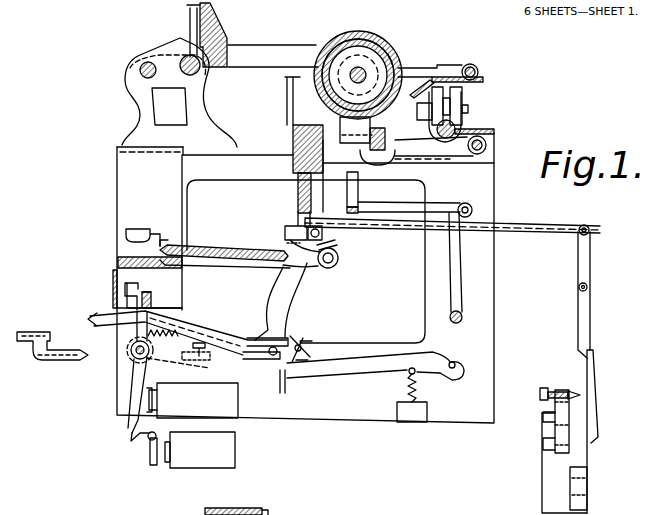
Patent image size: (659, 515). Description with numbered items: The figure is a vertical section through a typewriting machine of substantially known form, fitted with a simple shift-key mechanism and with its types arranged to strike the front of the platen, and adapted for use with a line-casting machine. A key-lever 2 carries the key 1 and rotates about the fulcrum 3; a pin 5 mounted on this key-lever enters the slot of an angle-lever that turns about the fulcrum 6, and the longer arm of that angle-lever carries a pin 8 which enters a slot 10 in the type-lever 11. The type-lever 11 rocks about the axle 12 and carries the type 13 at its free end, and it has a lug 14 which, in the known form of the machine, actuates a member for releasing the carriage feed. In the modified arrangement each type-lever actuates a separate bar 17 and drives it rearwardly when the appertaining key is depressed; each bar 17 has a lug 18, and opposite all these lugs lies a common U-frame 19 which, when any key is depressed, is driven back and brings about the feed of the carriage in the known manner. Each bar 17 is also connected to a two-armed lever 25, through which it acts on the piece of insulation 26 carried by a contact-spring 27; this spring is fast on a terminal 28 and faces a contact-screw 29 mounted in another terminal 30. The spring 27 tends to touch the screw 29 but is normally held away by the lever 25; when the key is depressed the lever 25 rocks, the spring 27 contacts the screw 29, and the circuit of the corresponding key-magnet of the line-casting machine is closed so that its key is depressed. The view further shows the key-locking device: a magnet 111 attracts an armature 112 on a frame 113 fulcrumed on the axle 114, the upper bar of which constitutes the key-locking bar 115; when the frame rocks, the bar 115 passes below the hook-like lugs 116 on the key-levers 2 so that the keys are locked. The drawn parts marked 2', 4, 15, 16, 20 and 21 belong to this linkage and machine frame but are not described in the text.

The key 1 is at (40, 332).
The key-lever 2 is at (179, 332).
The lever arm 2' is at (368, 370).
The fulcrum 3 is at (452, 362).
The spring 4 is at (408, 389).
The pin 5 is at (276, 349).
The fulcrum 6 is at (302, 350).
The pin 8 is at (338, 259).
The slot 10 is at (326, 250).
The type-lever 11 is at (225, 249).
The axle 12 is at (322, 236).
The type 13 is at (133, 231).
The lug 14 is at (287, 233).
The rod 15 is at (300, 187).
The guide block 16 is at (312, 194).
The bar 17 is at (390, 225).
The lug 18 is at (347, 215).
The U-frame 19 is at (358, 180).
The pivot 20 is at (472, 217).
The link 21 is at (462, 318).
The two-armed lever 25 is at (578, 253).
The piece of insulation 26 is at (593, 380).
The contact-spring 27 is at (568, 421).
The terminal 28 is at (575, 470).
The contact-screw 29 is at (551, 391).
The terminal 30 is at (548, 405).
The magnet 111 is at (238, 402).
The armature 112 is at (140, 396).
The frame 113 is at (136, 383).
The axle 114 is at (133, 357).
The key-locking bar 115 is at (150, 300).
The hook-like lug 116 is at (125, 297).